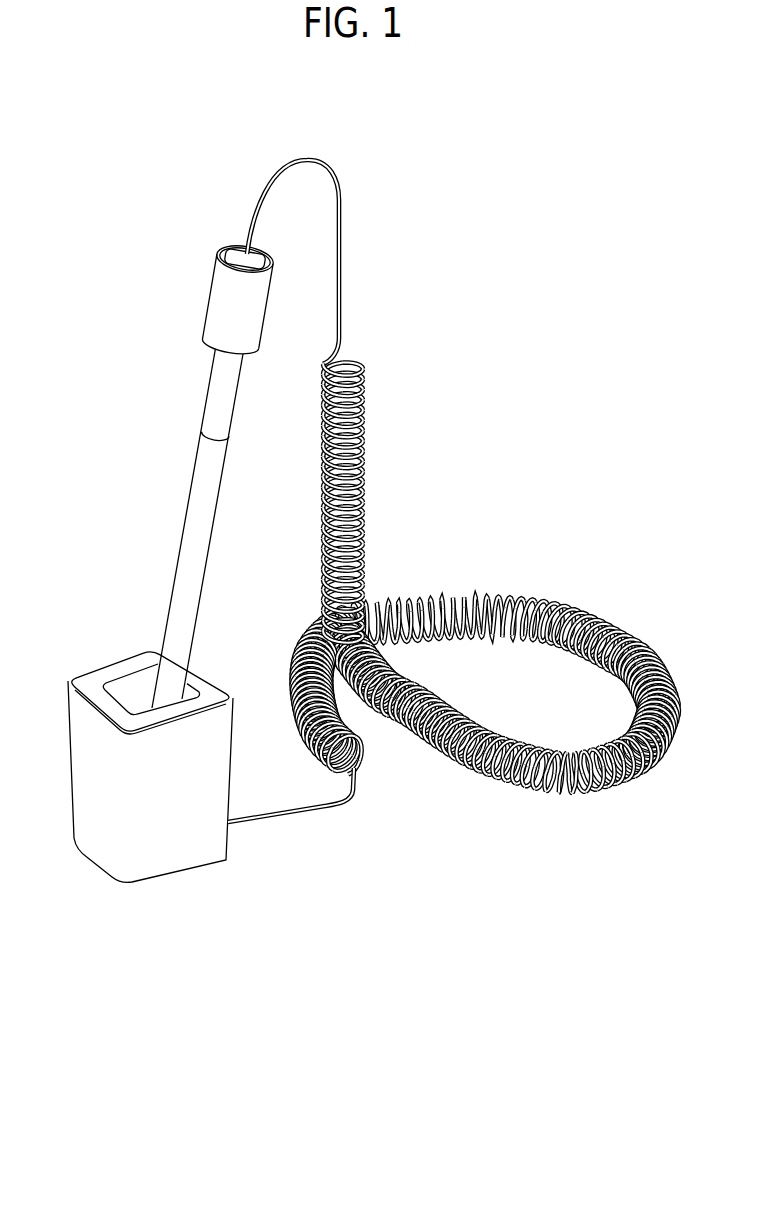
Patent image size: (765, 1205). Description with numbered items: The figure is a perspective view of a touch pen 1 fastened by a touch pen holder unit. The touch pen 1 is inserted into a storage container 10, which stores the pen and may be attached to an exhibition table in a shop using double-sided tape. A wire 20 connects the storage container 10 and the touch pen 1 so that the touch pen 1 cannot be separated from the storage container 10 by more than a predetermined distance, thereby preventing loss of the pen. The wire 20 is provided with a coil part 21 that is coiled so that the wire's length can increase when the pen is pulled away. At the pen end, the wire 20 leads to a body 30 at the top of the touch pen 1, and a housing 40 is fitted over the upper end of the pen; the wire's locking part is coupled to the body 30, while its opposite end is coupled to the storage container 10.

The touch pen 1 is at (190, 547).
The storage container 10 is at (162, 840).
The wire 20 is at (341, 198).
The coil part 21 is at (555, 607).
The body 30 is at (237, 250).
The housing 40 is at (222, 296).